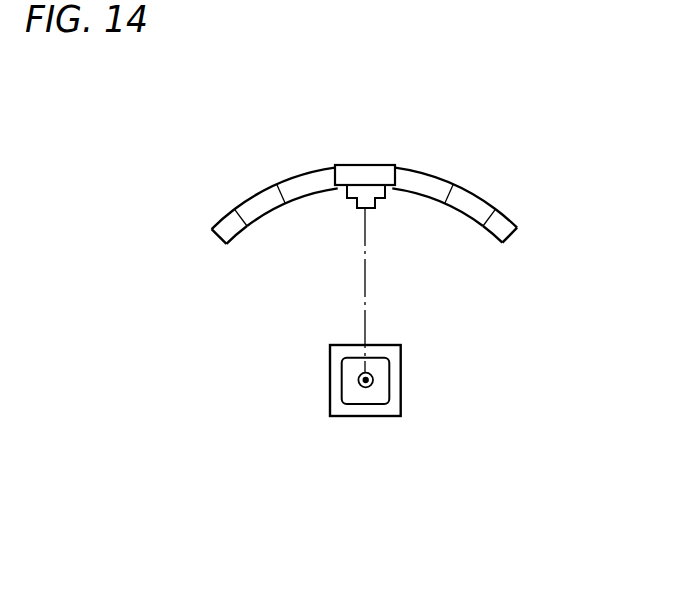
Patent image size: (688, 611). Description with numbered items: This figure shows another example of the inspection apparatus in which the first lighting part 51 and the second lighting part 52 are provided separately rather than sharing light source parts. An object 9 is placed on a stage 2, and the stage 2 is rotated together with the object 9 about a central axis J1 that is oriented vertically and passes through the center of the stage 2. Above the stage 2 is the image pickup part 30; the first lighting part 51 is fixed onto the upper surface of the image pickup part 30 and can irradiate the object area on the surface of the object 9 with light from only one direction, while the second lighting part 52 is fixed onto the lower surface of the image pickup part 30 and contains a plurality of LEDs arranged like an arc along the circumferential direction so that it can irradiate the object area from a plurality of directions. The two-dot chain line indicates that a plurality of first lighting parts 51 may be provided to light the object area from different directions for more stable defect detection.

The first lighting part 51 is at (240, 215).
The second lighting part 52 is at (313, 180).
The image pickup part 30 is at (377, 192).
The stage 2 is at (393, 368).
The object 9 is at (380, 383).
The central axis J1 is at (358, 383).